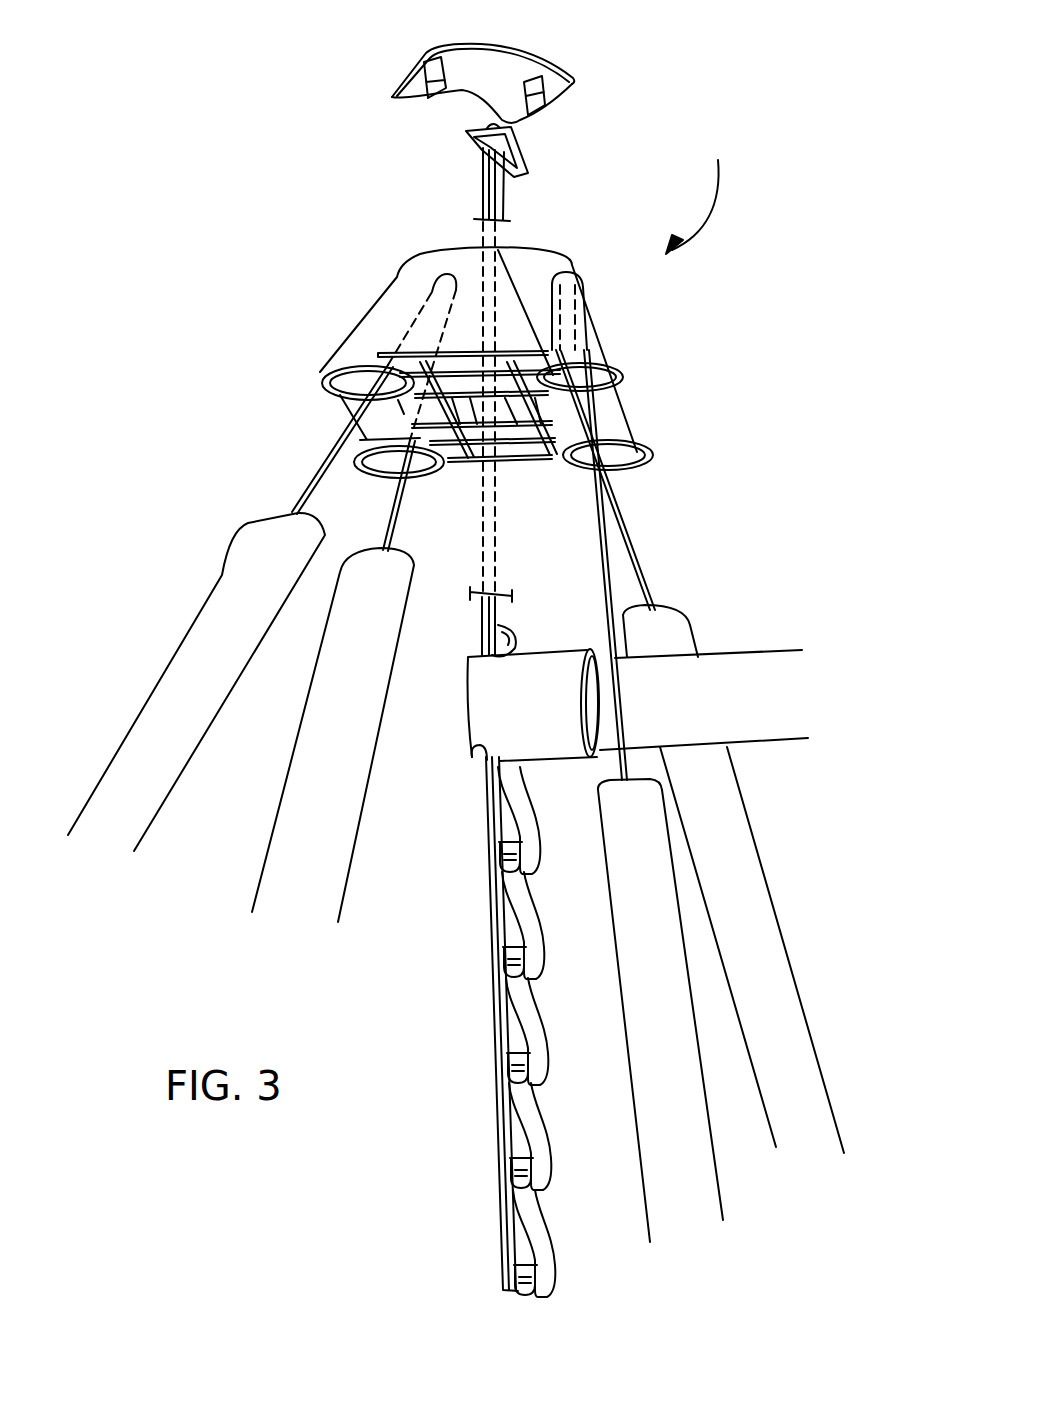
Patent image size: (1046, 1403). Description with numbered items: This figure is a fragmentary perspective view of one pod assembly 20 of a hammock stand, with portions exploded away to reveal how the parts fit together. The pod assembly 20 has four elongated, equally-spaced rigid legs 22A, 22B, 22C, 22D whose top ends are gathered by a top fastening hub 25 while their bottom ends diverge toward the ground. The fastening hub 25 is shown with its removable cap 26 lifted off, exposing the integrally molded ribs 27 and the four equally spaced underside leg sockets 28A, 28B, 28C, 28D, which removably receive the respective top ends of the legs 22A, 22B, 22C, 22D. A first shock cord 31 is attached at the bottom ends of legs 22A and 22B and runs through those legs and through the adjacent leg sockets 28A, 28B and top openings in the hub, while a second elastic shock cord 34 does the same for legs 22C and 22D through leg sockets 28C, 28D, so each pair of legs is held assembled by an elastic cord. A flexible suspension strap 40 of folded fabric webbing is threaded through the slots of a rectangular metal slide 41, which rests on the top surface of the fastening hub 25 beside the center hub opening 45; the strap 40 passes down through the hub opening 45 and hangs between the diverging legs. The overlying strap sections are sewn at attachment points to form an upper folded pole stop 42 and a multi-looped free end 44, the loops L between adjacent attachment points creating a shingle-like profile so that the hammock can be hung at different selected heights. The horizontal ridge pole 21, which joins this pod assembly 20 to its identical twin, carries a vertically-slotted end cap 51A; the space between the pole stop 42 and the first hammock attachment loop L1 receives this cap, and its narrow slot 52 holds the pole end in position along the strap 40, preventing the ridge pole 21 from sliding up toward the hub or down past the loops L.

The pod assembly 20 is at (693, 191).
The ridge pole 21 is at (737, 670).
The leg 22A is at (303, 776).
The leg 22B is at (223, 603).
The leg 22C is at (761, 927).
The leg 22D is at (705, 1183).
The top fastening hub 25 is at (533, 268).
The removable cap 26 is at (500, 46).
The ribs 27 is at (522, 462).
The leg socket 28A is at (430, 478).
The leg socket 28B is at (333, 393).
The leg socket 28C is at (640, 470).
The leg socket 28D is at (618, 384).
The first shock cord 31 is at (322, 462).
The second elastic shock cord 34 is at (603, 570).
The flexible suspension strap 40 is at (495, 907).
The rectangular metal slide 41 is at (520, 145).
The upper pole stop 42 is at (512, 634).
The multi-looped free end 44 is at (504, 1032).
The center hub opening 45 is at (457, 247).
The vertically-slotted end cap 51A is at (560, 698).
The narrow slot 52 is at (478, 750).
The first hammock attachment loop L1 is at (515, 808).
The loops L is at (540, 1020).